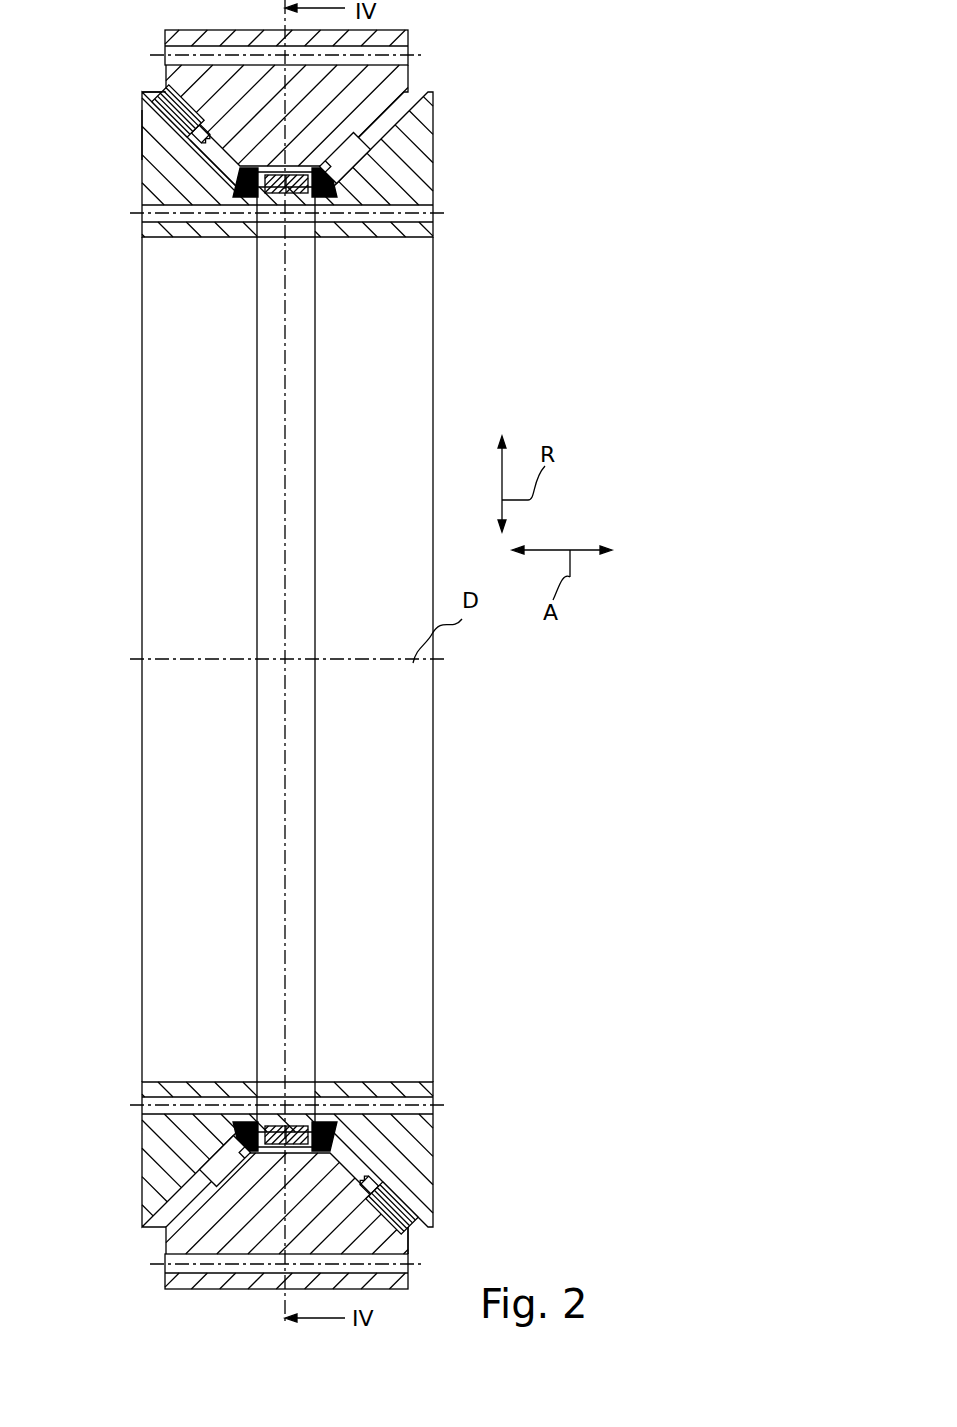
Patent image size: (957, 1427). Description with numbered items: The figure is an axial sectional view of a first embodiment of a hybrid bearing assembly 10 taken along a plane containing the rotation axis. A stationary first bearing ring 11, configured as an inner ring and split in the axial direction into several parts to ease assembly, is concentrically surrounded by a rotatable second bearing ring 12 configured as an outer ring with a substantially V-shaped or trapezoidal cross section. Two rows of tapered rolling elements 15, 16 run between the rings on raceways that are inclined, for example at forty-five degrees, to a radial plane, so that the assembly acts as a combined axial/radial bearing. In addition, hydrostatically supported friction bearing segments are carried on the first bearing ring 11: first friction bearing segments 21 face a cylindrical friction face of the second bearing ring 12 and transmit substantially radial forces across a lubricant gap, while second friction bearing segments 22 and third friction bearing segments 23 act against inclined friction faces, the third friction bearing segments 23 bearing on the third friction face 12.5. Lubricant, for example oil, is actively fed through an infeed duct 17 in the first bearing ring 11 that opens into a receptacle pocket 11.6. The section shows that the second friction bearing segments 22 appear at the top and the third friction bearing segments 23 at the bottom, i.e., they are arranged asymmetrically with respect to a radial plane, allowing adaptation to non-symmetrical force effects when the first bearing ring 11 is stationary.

The bearing assembly 10 is at (473, 144).
The first bearing ring 11 is at (425, 192).
The receptacle pocket 11.6 is at (147, 94).
The second bearing ring 12 is at (375, 97).
The third friction face 12.5 is at (420, 1239).
The rolling element 15 is at (362, 168).
The rolling element 16 is at (222, 168).
The infeed duct 17 is at (150, 146).
The first friction bearing segment 21 is at (270, 197).
The second friction bearing segment 22 is at (177, 107).
The third friction bearing segment 23 is at (410, 1217).